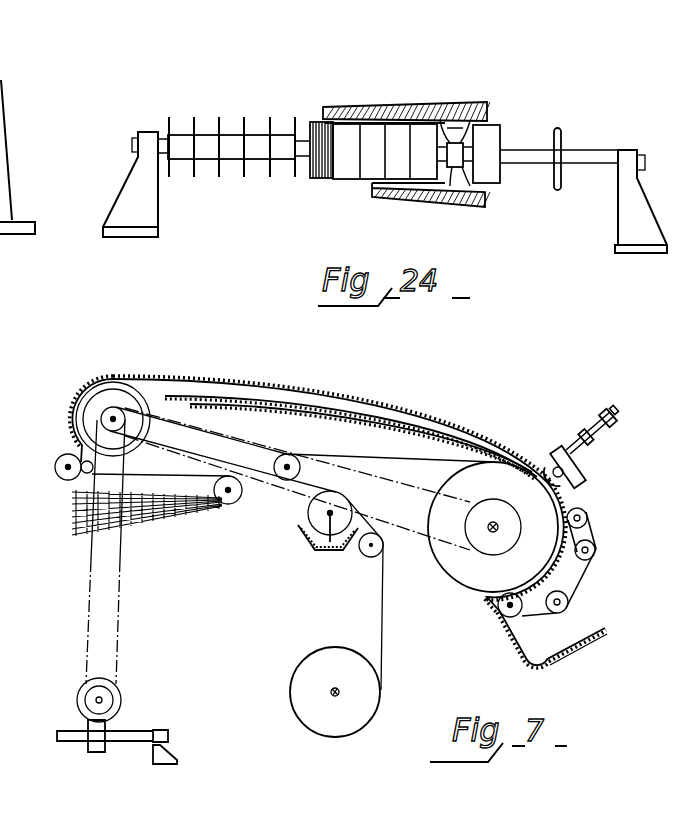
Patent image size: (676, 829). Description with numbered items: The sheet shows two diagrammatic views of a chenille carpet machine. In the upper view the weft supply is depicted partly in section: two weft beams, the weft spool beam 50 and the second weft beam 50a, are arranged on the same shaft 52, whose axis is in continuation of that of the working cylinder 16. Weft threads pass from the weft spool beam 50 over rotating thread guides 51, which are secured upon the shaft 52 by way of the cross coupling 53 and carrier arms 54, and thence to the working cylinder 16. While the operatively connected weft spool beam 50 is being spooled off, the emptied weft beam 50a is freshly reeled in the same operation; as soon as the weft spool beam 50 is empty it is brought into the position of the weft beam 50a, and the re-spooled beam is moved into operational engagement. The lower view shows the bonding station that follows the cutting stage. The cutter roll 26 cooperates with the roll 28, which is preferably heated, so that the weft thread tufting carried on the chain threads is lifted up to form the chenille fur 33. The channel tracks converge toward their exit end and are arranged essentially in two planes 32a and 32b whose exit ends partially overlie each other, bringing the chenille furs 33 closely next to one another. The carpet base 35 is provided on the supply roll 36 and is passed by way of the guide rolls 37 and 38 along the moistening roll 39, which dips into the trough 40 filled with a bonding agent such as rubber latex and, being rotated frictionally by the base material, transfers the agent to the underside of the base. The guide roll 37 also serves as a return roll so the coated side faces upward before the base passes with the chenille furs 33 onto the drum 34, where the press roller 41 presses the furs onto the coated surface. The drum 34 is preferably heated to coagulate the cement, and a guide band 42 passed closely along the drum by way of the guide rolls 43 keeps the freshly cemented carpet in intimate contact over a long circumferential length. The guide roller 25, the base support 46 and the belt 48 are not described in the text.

In FIG. 24, the working cylinder 16 is at (500, 130).
In FIG. 24, the weft spool beam 50 is at (350, 180).
In FIG. 24, the weft beam 50a is at (208, 160).
In FIG. 24, the rotating thread guide 51 is at (397, 104).
In FIG. 24, the shaft 52 is at (598, 139).
In FIG. 24, the cross coupling 53 is at (462, 130).
In FIG. 24, the carrier arm 54 is at (447, 120).
In FIG. 7, the guide roller 25 is at (233, 478).
In FIG. 7, the cutter roll 26 is at (56, 476).
In FIG. 7, the roll 28 is at (108, 398).
In FIG. 7, the plane of channel tracks 32a is at (310, 410).
In FIG. 7, the plane of channel tracks 32b is at (418, 428).
In FIG. 7, the chenille fur 33 is at (468, 432).
In FIG. 7, the drum 34 is at (478, 582).
In FIG. 7, the carpet base 35 is at (384, 658).
In FIG. 7, the supply roll 36 is at (292, 674).
In FIG. 7, the guide roll 37 is at (300, 470).
In FIG. 7, the guide roll 38 is at (372, 558).
In FIG. 7, the moistening roll 39 is at (324, 552).
In FIG. 7, the trough 40 is at (313, 536).
In FIG. 7, the press roller 41 is at (572, 489).
In FIG. 7, the guide band 42 is at (582, 602).
In FIG. 7, the guide rolls 43 is at (592, 548).
In FIG. 7, the support base 46 is at (132, 731).
In FIG. 7, the belt 48 is at (122, 632).